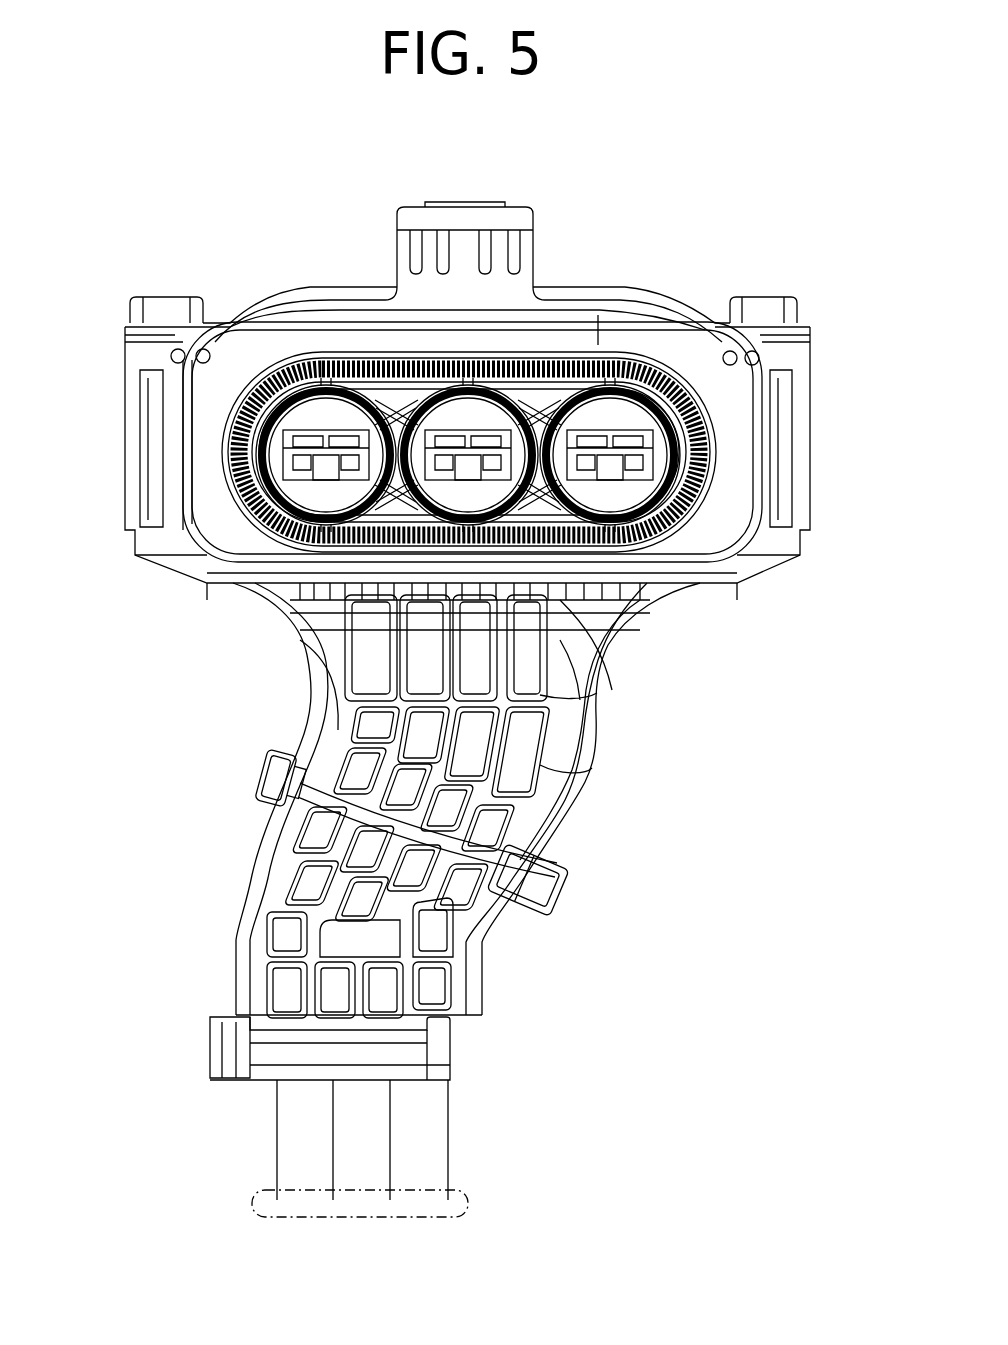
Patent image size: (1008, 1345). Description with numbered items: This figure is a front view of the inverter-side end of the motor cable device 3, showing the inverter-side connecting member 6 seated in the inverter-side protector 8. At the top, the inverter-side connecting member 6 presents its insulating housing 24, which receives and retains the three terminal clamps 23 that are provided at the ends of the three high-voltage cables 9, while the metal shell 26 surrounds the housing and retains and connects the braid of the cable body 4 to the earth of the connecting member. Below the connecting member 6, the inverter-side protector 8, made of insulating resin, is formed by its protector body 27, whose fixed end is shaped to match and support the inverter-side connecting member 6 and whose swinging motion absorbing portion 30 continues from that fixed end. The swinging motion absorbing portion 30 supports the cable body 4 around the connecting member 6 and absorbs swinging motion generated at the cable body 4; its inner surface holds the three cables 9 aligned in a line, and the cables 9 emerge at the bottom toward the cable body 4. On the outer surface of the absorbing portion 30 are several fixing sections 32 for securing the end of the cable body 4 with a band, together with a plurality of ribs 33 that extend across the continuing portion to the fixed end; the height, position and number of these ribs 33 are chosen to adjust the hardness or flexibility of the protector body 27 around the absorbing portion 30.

The motor cable device 3 is at (746, 182).
The cable body 4 is at (470, 1205).
The inverter-side connecting member 6 is at (240, 522).
The inverter-side protector 8 is at (606, 686).
The high-voltage cables 9 is at (305, 1117).
The terminal clamps 23 is at (503, 440).
The insulating housing 24 is at (722, 524).
The metal shell 26 is at (792, 370).
The protector body 27 is at (598, 758).
The swinging motion absorbing portion 30 is at (262, 855).
The fixing sections 32 is at (268, 785).
The ribs 33 is at (565, 800).